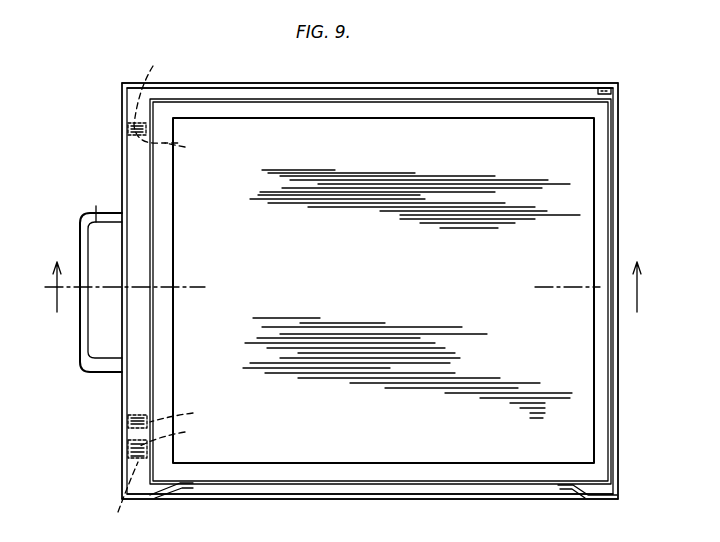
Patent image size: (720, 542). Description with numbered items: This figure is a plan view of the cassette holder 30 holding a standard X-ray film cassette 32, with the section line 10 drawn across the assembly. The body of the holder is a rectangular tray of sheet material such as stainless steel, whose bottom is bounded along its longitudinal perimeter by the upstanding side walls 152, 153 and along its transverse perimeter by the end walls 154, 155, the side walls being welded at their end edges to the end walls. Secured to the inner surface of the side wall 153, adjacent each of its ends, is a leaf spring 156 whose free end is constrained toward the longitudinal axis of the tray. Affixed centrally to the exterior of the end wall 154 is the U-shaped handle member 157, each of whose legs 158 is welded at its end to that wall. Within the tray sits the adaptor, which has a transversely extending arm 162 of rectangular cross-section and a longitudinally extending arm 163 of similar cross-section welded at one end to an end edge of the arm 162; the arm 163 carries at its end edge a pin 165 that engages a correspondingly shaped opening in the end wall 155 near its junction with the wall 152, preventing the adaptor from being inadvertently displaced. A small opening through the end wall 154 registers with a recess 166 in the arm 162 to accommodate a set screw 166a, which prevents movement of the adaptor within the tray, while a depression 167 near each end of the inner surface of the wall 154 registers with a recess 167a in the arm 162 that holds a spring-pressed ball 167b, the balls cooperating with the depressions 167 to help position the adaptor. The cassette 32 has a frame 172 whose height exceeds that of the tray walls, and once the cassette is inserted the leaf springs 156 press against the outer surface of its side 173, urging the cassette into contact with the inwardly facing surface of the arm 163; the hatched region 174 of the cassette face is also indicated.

The section line 10 is at (349, 287).
The display assembly 30 is at (631, 152).
The X-ray film cassette 32 is at (512, 361).
The side wall 152 is at (497, 86).
The side wall 153 is at (488, 494).
The end wall 154 is at (120, 158).
The end wall 155 is at (620, 202).
The leaf spring 156 is at (174, 492).
The U-shaped handle member 157 is at (80, 316).
The legs 158 is at (78, 388).
The transversely extending arm 162 is at (140, 337).
The longitudinally extending arm 163 is at (372, 95).
The pin 165 is at (614, 92).
The recess 166 is at (140, 415).
The set screw 166a is at (194, 412).
The depression 167 is at (128, 128).
The recess 167a is at (143, 294).
The spring-pressed ball 167b is at (185, 291).
The frame 172 is at (175, 192).
The side 173 is at (333, 486).
The display panel 174 is at (458, 120).